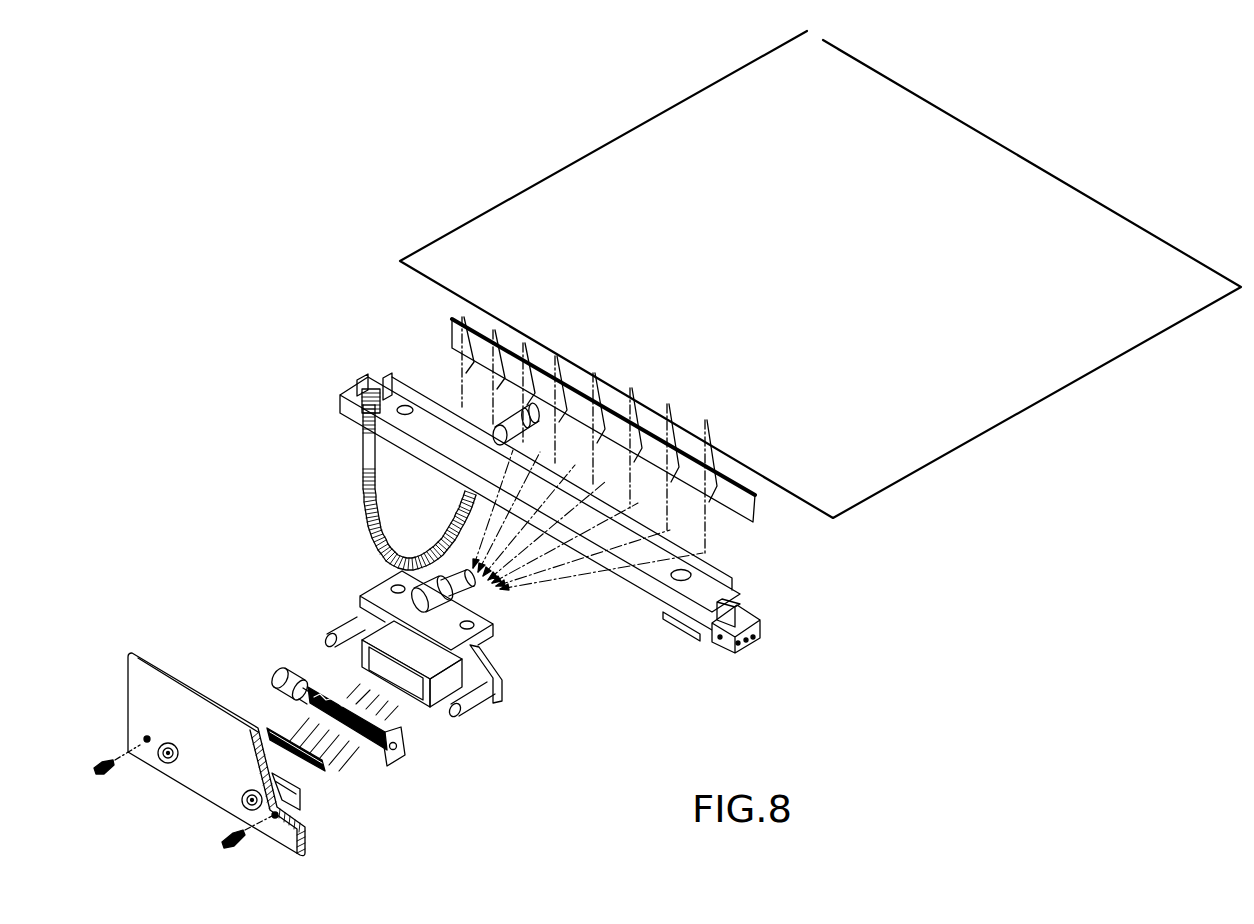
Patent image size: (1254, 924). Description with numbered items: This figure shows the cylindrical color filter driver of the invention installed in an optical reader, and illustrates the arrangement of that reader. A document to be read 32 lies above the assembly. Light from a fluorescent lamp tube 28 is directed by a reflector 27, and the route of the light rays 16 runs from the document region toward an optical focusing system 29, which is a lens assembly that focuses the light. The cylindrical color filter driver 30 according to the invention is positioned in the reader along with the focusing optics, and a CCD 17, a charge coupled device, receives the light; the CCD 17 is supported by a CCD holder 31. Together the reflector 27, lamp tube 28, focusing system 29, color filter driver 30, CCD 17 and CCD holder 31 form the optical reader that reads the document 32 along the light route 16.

The route of the light rays 16 is at (545, 562).
The CCD 17 is at (328, 773).
The reflector 27 is at (757, 510).
The fluorescent lamp tube 28 is at (753, 645).
The optical focusing system 29 is at (502, 692).
The cylindrical color filter driver 30 is at (407, 757).
The CCD holder 31 is at (298, 840).
The document to be read 32 is at (1128, 352).